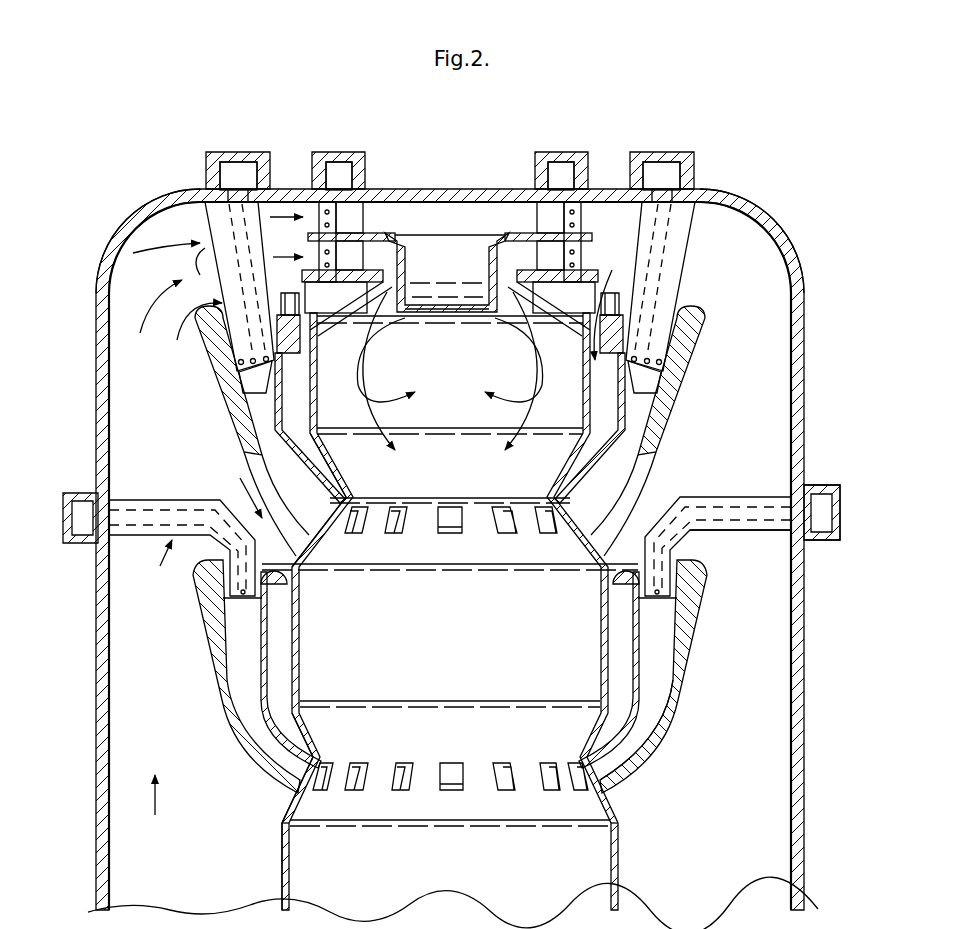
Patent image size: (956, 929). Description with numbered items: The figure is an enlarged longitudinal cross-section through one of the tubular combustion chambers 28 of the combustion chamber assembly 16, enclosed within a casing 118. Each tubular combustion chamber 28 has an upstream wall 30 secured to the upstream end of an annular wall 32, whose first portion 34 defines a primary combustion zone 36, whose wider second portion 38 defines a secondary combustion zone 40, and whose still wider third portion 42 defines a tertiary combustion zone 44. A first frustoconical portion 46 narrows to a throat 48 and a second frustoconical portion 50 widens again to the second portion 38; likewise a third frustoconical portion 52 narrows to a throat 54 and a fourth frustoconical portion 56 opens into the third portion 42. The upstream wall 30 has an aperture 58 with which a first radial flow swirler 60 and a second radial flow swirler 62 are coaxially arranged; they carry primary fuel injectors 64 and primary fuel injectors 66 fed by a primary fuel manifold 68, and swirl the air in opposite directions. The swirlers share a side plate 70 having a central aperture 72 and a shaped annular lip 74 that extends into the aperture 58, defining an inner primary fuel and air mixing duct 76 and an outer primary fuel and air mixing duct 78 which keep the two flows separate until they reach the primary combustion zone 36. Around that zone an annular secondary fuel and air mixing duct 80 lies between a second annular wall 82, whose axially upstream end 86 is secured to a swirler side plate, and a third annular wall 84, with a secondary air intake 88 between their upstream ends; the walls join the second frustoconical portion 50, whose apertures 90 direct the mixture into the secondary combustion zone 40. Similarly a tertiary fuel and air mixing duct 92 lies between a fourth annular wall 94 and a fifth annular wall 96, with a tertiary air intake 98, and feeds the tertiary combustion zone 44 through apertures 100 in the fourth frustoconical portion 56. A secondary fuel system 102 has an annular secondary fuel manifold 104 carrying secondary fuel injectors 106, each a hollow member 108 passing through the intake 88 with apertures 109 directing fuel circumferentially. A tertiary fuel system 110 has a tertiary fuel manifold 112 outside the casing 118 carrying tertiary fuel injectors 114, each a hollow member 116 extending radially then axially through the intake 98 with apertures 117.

The combustion chamber assembly 16 is at (720, 180).
The tubular combustion chamber 28 is at (622, 856).
The upstream wall 30 is at (573, 318).
The annular wall 32 is at (264, 385).
The first portion 34 is at (252, 458).
The primary combustion zone 36 is at (450, 375).
The second portion 38 is at (302, 640).
The secondary combustion zone 40 is at (450, 672).
The third portion 42 is at (280, 850).
The tertiary combustion zone 44 is at (450, 861).
The first frustoconical portion 46 is at (345, 460).
The throat 48 is at (335, 530).
The second frustoconical portion 50 is at (335, 520).
The third frustoconical portion 52 is at (305, 740).
The throat 54 is at (305, 772).
The fourth frustoconical portion 56 is at (295, 805).
The aperture 58 is at (392, 312).
The first radial flow swirler 60 is at (402, 255).
The second radial flow swirler 62 is at (355, 220).
The primary fuel injectors 64 is at (345, 257).
The primary fuel injectors 66 is at (338, 160).
The primary fuel manifold 68 is at (328, 160).
The side plate 70 is at (527, 237).
The central aperture 72 is at (455, 232).
The annular lip 74 is at (492, 312).
The inner primary fuel and air mixing duct 76 is at (472, 250).
The outer primary fuel and air mixing duct 78 is at (505, 275).
The secondary fuel and air mixing duct 80 is at (640, 440).
The second annular wall 82 is at (622, 405).
The third annular wall 84 is at (648, 476).
The axially upstream end 86 is at (612, 303).
The secondary air intake 88 is at (680, 310).
The apertures 90 is at (350, 535).
The tertiary fuel and air mixing duct 92 is at (655, 683).
The fourth annular wall 94 is at (640, 650).
The fifth annular wall 96 is at (668, 742).
The tertiary air intake 98 is at (685, 548).
The apertures 100 is at (333, 792).
The secondary fuel system 102 is at (670, 150).
The secondary fuel manifold 104 is at (235, 160).
The secondary fuel injectors 106 is at (205, 223).
The hollow member 108 is at (684, 248).
The apertures 109 is at (664, 362).
The tertiary fuel system 110 is at (838, 484).
The tertiary fuel manifold 112 is at (834, 514).
The tertiary fuel injectors 114 is at (762, 524).
The hollow member 116 is at (157, 498).
The apertures 117 is at (240, 600).
The casing 118 is at (806, 768).